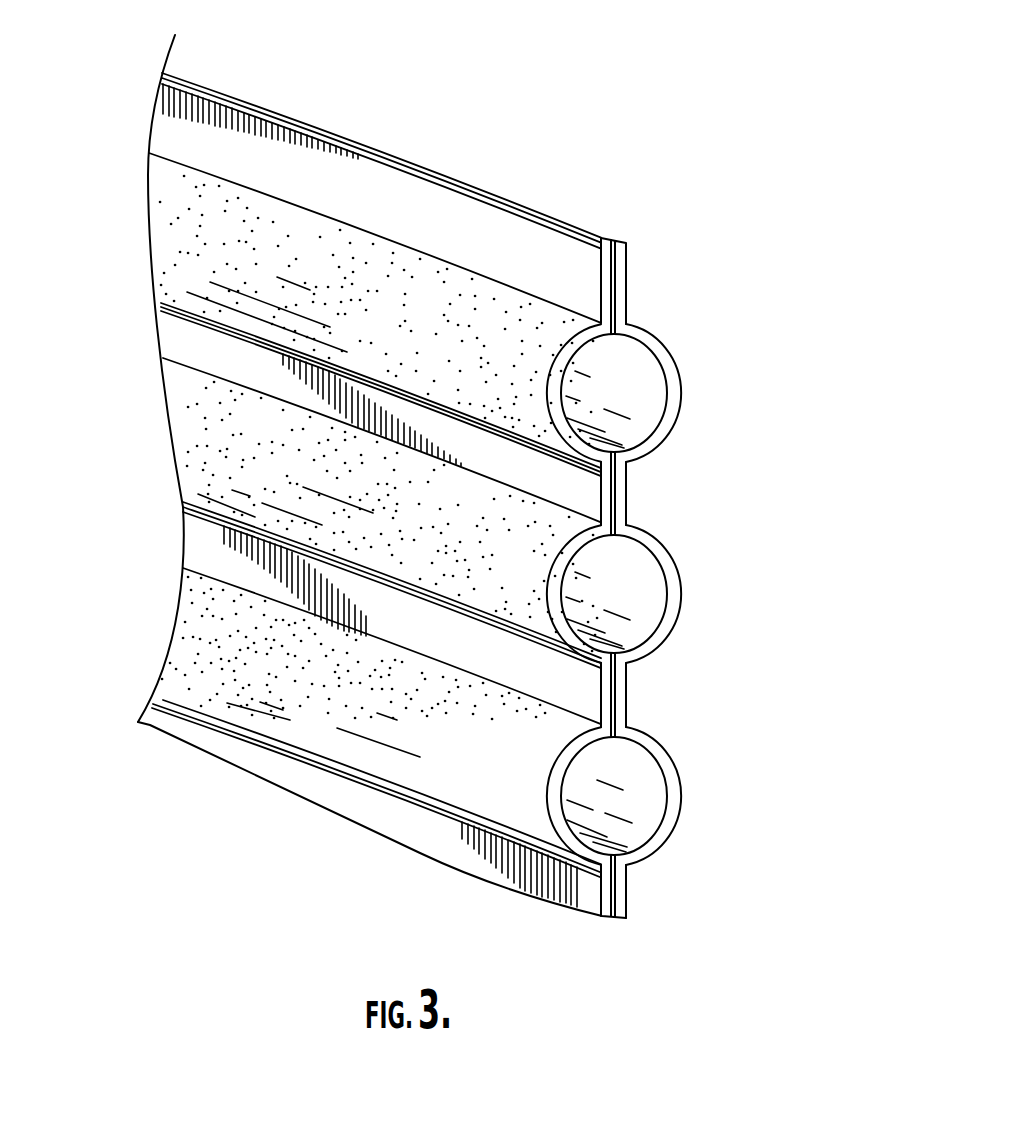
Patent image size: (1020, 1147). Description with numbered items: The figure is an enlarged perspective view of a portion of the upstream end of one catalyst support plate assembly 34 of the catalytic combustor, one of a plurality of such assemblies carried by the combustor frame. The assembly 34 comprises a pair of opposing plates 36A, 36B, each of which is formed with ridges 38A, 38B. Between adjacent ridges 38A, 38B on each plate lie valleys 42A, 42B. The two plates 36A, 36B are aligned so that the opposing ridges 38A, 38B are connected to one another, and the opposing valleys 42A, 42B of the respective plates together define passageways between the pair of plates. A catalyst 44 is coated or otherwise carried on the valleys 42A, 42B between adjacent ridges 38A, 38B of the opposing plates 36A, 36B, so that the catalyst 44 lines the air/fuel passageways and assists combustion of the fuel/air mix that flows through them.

The catalyst support plate assembly 34 is at (721, 69).
The opposing plate 36A is at (545, 220).
The opposing plate 36B is at (628, 268).
The ridge 38A is at (605, 297).
The ridge 38B is at (627, 305).
The valley 42A is at (557, 565).
The valley 42B is at (675, 397).
The catalyst 44 is at (218, 219).